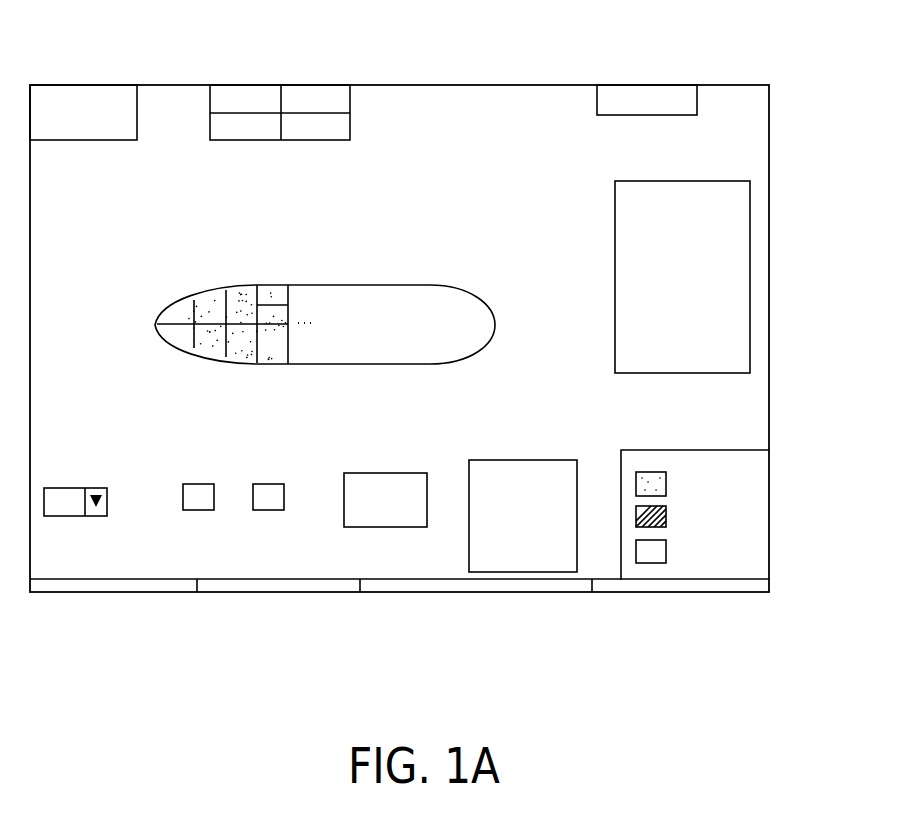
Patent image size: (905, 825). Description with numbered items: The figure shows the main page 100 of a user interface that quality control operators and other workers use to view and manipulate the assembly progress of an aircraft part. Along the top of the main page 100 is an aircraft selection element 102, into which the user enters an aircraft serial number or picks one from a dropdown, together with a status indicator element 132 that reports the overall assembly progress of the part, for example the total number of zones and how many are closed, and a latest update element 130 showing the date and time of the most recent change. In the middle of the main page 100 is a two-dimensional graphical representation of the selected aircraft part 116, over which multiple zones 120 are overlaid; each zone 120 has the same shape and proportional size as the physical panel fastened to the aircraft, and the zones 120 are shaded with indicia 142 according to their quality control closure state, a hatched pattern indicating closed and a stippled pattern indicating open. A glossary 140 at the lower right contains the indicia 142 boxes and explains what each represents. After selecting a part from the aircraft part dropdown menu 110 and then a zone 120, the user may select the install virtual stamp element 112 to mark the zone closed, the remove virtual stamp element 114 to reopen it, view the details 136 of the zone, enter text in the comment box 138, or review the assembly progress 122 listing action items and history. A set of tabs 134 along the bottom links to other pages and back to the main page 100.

The main page 100 is at (777, 598).
The aircraft selection element 102 is at (138, 115).
The aircraft part dropdown menu 110 is at (107, 489).
The install virtual stamp element 112 is at (200, 483).
The remove virtual stamp element 114 is at (270, 511).
The selected aircraft part 116 is at (300, 322).
The zones 120 is at (183, 318).
The assembly progress 122 is at (750, 295).
The latest update element 130 is at (655, 115).
The status indicator element 132 is at (352, 105).
The tabs 134 is at (637, 583).
The details 136 is at (378, 528).
The comment box 138 is at (530, 460).
The glossary 140 is at (695, 488).
The indicia 142 is at (667, 484).